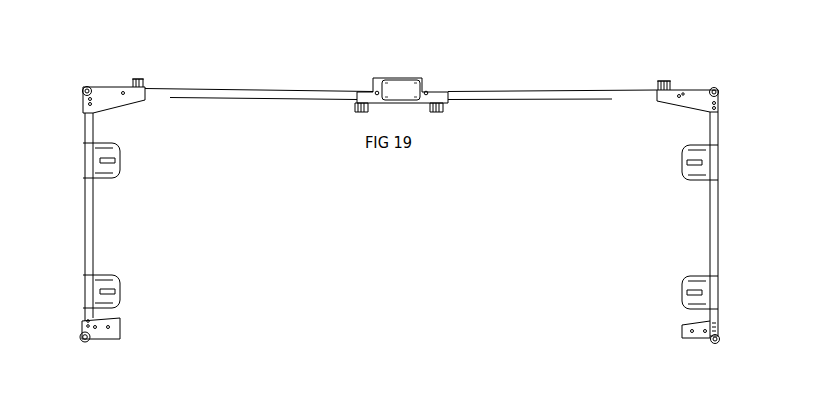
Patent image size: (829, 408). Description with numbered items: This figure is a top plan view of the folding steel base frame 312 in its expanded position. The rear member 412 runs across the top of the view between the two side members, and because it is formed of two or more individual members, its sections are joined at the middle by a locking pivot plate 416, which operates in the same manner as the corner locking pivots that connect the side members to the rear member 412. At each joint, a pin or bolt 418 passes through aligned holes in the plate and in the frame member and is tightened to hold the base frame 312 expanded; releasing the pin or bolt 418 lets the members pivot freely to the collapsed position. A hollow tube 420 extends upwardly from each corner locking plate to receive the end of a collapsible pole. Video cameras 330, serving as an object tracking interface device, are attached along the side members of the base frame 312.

The folding steel base frame 312 is at (619, 68).
The video camera 330 is at (716, 292).
The rear member 412 is at (267, 88).
The locking pivot plate 416 is at (420, 77).
The pin or bolt 418 is at (428, 91).
The hollow tube 420 is at (721, 89).